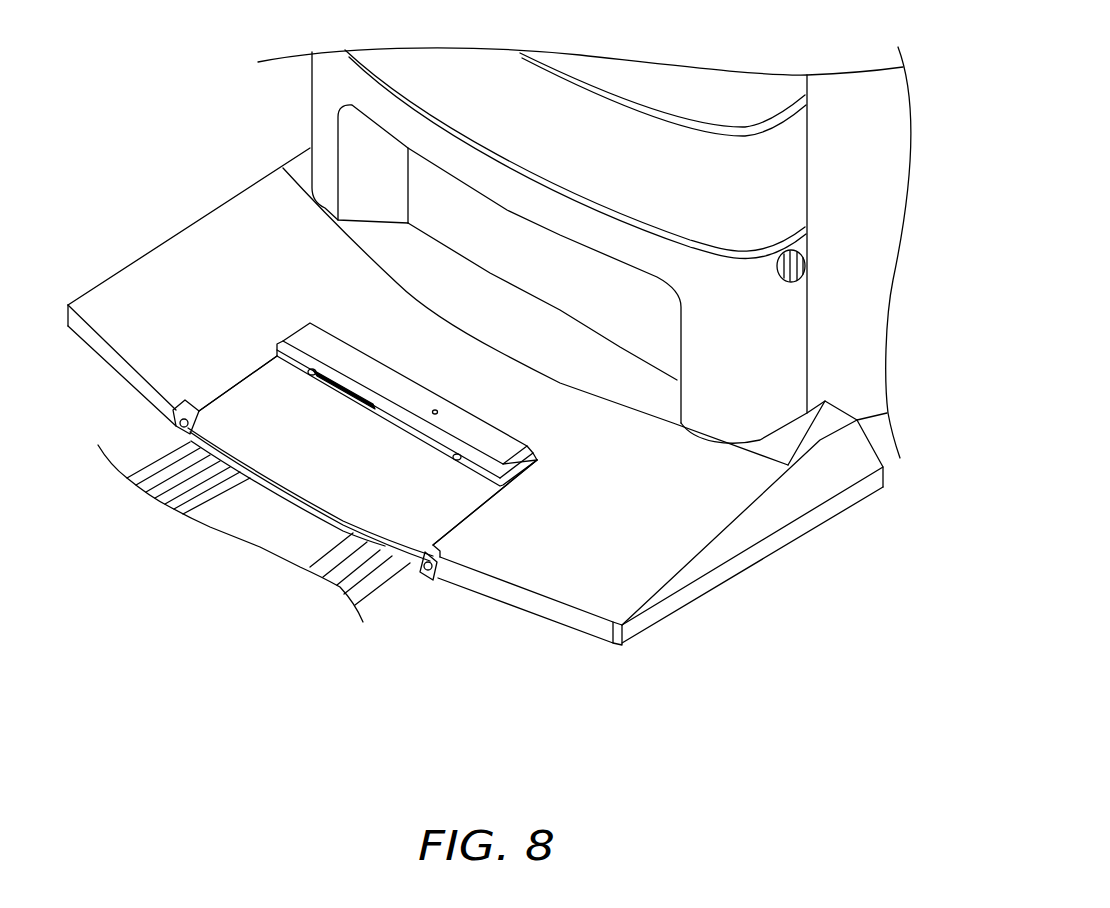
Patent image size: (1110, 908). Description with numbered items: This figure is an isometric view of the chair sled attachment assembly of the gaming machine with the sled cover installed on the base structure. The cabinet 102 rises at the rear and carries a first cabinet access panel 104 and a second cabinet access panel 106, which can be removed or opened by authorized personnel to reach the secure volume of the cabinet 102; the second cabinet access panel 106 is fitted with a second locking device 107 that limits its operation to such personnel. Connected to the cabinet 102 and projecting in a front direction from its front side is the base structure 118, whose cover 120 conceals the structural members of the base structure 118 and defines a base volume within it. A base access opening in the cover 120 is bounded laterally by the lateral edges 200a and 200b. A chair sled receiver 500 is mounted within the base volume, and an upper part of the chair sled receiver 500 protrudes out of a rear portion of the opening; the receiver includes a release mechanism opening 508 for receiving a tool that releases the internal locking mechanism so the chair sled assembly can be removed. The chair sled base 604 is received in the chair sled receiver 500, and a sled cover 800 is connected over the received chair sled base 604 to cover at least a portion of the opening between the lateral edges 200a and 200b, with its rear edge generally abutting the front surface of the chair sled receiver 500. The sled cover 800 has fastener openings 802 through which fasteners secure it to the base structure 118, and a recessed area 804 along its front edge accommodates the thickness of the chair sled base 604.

The cabinet 102 is at (880, 152).
The first cabinet access panel 104 is at (750, 190).
The second cabinet access panel 106 is at (755, 335).
The second locking device 107 is at (806, 267).
The base structure 118 is at (140, 202).
The cover 120 is at (633, 568).
The lateral edge 200a is at (237, 388).
The lateral edge 200b is at (453, 533).
The chair sled receiver 500 is at (312, 343).
The release mechanism opening 508 is at (436, 411).
The chair sled base 604 is at (240, 515).
The sled cover 800 is at (440, 492).
The fastener openings 802 is at (177, 430).
The recessed area 804 is at (310, 510).